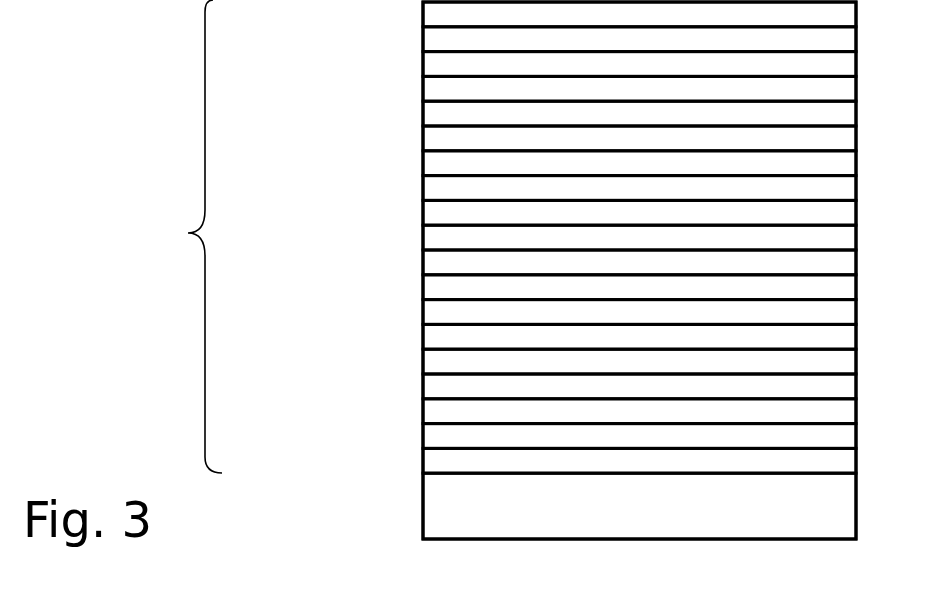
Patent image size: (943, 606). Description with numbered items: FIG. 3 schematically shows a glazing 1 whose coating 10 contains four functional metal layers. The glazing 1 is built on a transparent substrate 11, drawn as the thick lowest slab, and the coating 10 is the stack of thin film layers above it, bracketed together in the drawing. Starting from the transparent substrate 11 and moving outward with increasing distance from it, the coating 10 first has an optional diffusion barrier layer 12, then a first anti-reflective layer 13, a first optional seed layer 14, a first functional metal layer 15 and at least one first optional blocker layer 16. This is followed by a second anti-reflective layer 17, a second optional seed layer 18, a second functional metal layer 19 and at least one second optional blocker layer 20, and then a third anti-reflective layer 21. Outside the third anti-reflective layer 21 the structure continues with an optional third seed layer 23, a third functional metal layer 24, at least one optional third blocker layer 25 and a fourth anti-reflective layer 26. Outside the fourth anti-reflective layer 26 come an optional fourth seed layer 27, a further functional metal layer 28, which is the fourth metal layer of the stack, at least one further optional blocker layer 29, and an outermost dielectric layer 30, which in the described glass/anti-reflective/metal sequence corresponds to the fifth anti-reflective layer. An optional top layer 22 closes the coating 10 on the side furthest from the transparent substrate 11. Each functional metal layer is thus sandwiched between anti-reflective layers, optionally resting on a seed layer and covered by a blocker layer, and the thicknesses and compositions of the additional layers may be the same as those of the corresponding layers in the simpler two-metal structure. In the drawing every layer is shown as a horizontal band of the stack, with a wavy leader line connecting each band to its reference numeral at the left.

The glazing 1 is at (652, 545).
The coating 10 is at (189, 236).
The transparent substrate 11 is at (557, 506).
The diffusion barrier layer 12 is at (557, 461).
The first anti-reflective layer 13 is at (557, 436).
The first seed layer 14 is at (557, 411).
The first functional metal layer 15 is at (557, 386).
The first blocker layer 16 is at (557, 362).
The second anti-reflective layer 17 is at (557, 337).
The second seed layer 18 is at (557, 312).
The second functional metal layer 19 is at (557, 287).
The second blocker layer 20 is at (557, 262).
The third anti-reflective layer 21 is at (557, 238).
The top layer 22 is at (557, 14).
The third seed layer 23 is at (557, 213).
The third functional metal layer 24 is at (557, 188).
The third blocker layer 25 is at (557, 163).
The fourth anti-reflective layer 26 is at (557, 138).
The fourth seed layer 27 is at (557, 114).
The fourth functional metal layer 28 is at (557, 89).
The fourth blocker layer 29 is at (557, 64).
The layer 30 is at (557, 39).